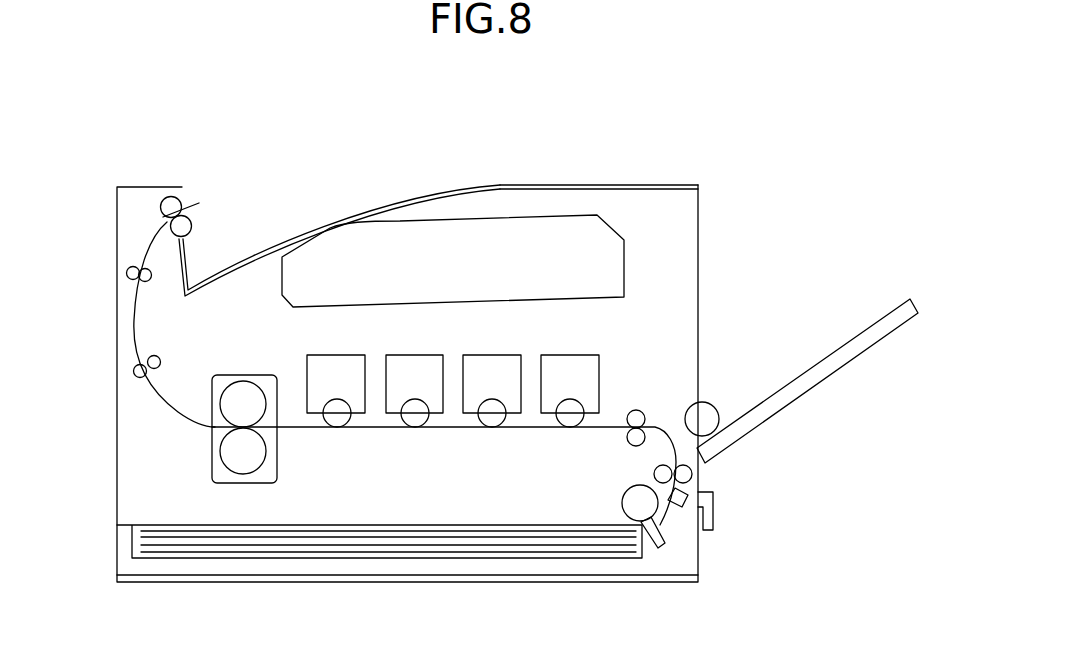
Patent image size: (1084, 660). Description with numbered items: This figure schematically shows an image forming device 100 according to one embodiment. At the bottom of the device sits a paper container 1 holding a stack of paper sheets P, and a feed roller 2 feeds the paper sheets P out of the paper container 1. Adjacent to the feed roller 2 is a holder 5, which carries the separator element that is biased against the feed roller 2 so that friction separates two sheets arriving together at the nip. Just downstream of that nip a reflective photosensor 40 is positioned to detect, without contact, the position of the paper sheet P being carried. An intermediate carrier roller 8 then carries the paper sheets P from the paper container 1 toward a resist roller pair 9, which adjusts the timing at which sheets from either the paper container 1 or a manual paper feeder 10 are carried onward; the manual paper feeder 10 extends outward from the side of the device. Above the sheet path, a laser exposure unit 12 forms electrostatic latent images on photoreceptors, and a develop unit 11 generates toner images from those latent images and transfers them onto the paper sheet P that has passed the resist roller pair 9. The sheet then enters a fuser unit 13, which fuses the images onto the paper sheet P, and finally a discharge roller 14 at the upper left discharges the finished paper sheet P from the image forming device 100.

The image forming device 100 is at (677, 169).
The paper container 1 is at (452, 512).
The discharge roller 14 is at (172, 207).
The laser exposure unit 12 is at (368, 293).
The fuser unit 13 is at (222, 378).
The develop unit 11 is at (583, 382).
The resist roller pair 9 is at (636, 410).
The manual paper feeder 10 is at (720, 437).
The intermediate carrier roller 8 is at (692, 473).
The feed roller 2 is at (623, 492).
The reflective photosensor 40 is at (681, 506).
The holder 5 is at (655, 548).
The paper sheet P is at (338, 526).